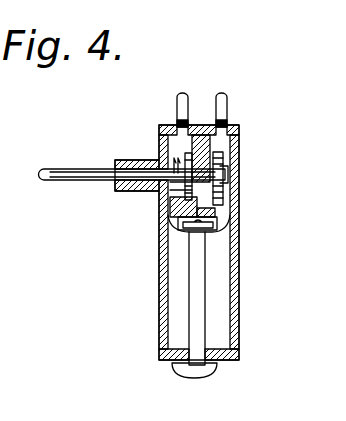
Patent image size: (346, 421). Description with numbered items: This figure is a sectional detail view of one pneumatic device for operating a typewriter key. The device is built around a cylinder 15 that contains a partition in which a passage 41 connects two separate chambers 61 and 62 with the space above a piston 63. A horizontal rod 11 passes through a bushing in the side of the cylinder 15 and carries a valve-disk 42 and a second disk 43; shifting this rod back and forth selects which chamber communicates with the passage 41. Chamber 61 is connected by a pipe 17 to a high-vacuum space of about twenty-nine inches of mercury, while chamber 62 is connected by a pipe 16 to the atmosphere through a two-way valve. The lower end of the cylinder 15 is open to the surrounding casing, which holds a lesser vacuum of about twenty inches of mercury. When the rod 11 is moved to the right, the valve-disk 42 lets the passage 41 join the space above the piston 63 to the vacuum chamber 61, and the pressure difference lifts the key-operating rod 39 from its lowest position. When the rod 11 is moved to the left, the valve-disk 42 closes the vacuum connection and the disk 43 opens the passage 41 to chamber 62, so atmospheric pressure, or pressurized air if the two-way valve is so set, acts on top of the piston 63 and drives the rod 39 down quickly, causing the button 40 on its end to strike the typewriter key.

The operating rod 11 is at (82, 181).
The cylinder 15 is at (240, 240).
The pipe 16 is at (177, 103).
The pipe 17 is at (228, 105).
The key-operating rod 39 is at (200, 310).
The button 40 is at (197, 370).
The passage 41 is at (226, 206).
The valve-disk 42 is at (224, 161).
The disk 43 is at (160, 200).
The chamber 61 is at (242, 134).
The chamber 62 is at (160, 140).
The piston 63 is at (168, 232).